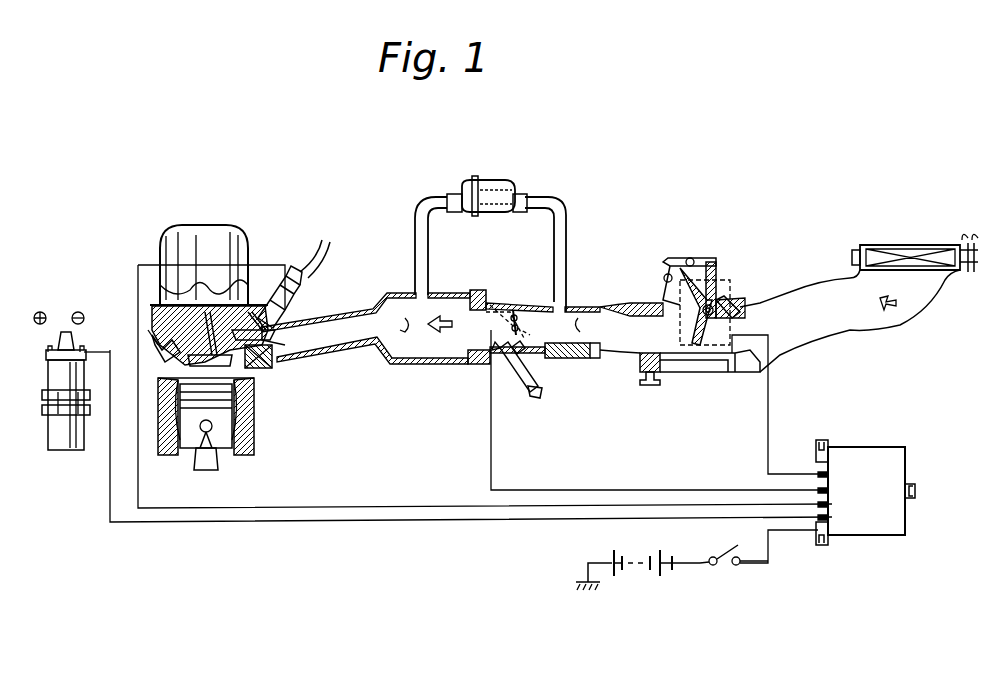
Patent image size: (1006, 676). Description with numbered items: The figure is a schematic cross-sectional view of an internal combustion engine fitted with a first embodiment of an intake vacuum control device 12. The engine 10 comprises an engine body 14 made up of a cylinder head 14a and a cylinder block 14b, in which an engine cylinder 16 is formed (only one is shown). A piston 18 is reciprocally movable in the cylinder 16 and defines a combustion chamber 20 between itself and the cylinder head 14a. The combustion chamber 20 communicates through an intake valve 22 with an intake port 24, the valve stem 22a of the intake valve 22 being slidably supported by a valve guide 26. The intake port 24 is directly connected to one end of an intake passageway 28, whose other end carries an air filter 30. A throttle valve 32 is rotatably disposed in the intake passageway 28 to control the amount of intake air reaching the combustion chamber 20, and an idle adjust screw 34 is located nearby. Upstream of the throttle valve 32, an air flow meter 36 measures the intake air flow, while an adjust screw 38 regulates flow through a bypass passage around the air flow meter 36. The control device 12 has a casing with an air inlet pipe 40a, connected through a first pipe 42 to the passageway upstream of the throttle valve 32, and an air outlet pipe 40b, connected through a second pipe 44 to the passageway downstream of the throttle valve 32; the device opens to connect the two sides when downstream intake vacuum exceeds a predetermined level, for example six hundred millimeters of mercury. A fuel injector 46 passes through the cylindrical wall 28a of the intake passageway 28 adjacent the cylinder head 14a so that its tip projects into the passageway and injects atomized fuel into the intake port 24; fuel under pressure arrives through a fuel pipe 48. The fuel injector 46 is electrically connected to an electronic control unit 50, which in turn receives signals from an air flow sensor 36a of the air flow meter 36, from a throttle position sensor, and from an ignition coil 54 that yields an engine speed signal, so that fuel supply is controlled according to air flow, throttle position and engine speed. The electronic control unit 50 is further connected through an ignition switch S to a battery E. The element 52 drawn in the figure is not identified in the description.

The engine 10 is at (338, 181).
The intake vacuum control device 12 is at (491, 172).
The engine body 14 is at (238, 217).
The cylinder head 14a is at (150, 316).
The cylinder block 14b is at (258, 410).
The engine cylinder 16 is at (188, 455).
The piston 18 is at (217, 457).
The combustion chamber 20 is at (252, 432).
The intake valve 22 is at (252, 378).
The valve stem 22a is at (263, 272).
The intake port 24 is at (272, 368).
The valve guide 26 is at (152, 290).
The intake passageway 28 is at (420, 360).
The cylindrical wall 28a is at (318, 318).
The air filter 30 is at (918, 245).
The throttle valve 32 is at (514, 303).
The idle adjust screw 34 is at (538, 400).
The air flow meter 36 is at (706, 262).
The air flow sensor 36a is at (742, 318).
The adjust screw 38 is at (646, 375).
The air inlet pipe 40a is at (522, 190).
The air outlet pipe 40b is at (452, 190).
The first pipe 42 is at (567, 235).
The second pipe 44 is at (415, 225).
The fuel injector 46 is at (288, 275).
The fuel pipe 48 is at (322, 246).
The electronic control unit 50 is at (877, 499).
The sensor mount 52 is at (562, 360).
The ignition coil 54 is at (54, 452).
The battery E is at (640, 568).
The ignition switch S is at (722, 568).